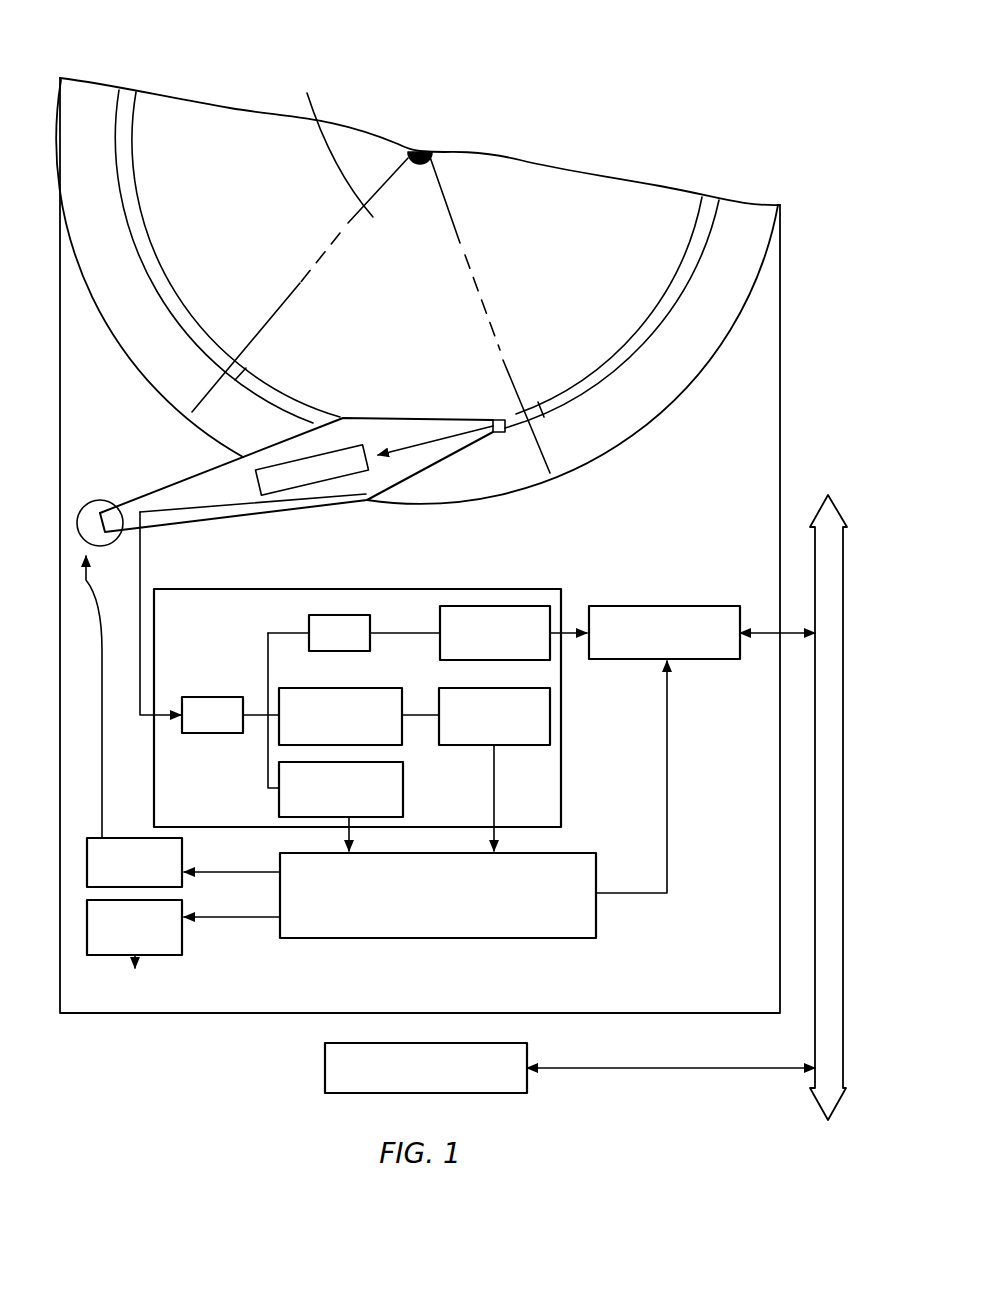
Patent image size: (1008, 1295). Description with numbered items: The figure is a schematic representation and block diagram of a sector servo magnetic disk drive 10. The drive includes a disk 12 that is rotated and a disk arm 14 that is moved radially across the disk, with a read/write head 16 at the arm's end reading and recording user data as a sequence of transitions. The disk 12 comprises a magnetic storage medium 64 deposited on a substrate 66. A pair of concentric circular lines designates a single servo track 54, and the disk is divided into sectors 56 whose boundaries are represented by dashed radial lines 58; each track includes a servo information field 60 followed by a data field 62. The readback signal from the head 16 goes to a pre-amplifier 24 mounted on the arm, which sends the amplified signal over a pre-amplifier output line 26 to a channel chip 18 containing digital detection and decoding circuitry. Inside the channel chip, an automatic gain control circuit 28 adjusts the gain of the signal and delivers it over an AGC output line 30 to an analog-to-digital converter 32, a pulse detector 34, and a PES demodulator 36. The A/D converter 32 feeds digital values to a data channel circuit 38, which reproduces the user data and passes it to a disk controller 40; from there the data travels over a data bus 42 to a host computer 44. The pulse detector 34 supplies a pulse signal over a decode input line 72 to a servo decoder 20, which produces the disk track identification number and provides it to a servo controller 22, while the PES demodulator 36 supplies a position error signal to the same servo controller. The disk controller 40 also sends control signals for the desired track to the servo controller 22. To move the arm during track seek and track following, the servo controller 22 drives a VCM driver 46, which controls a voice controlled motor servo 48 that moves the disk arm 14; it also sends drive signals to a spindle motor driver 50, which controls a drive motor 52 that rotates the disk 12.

The sector servo magnetic disk drive 10 is at (87, 58).
The disk 12 is at (630, 447).
The disk arm 14 is at (383, 418).
The read/write head 16 is at (494, 415).
The channel chip 18 is at (530, 589).
The servo decoder 20 is at (550, 716).
The servo controller 22 is at (400, 940).
The pre-amplifier 24 is at (318, 483).
The pre-amplifier output line 26 is at (140, 530).
The automatic gain control (AGC) circuit 28 is at (212, 697).
The AGC output line 30 is at (255, 716).
The analog-to-digital (A/D) converter 32 is at (309, 628).
The pulse detector 34 is at (402, 736).
The PES demodulator 36 is at (279, 800).
The data channel circuit 38 is at (440, 628).
The disk controller 40 is at (665, 606).
The data bus 42 is at (815, 1088).
The host computer 44 is at (325, 1055).
The VCM driver 46 is at (125, 838).
The voice controlled motor (VCM) servo 48 is at (93, 499).
The spindle motor driver 50 is at (182, 940).
The drive motor 52 is at (421, 140).
The servo track 54 is at (638, 358).
The sectors 56 is at (332, 150).
The dashed radial lines 58 is at (455, 227).
The servo information field 60 is at (237, 372).
The data field 62 is at (265, 382).
The magnetic storage medium 64 is at (219, 185).
The substrate 66 is at (718, 333).
The decode input line 72 is at (419, 715).